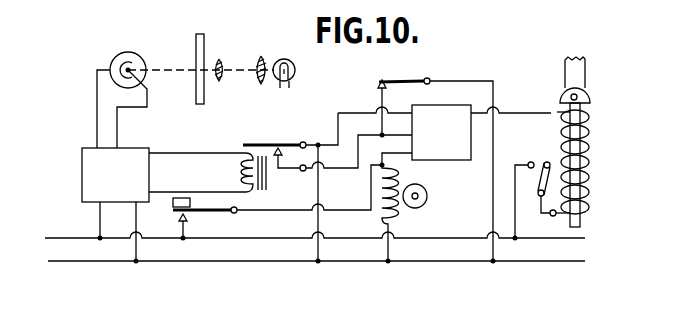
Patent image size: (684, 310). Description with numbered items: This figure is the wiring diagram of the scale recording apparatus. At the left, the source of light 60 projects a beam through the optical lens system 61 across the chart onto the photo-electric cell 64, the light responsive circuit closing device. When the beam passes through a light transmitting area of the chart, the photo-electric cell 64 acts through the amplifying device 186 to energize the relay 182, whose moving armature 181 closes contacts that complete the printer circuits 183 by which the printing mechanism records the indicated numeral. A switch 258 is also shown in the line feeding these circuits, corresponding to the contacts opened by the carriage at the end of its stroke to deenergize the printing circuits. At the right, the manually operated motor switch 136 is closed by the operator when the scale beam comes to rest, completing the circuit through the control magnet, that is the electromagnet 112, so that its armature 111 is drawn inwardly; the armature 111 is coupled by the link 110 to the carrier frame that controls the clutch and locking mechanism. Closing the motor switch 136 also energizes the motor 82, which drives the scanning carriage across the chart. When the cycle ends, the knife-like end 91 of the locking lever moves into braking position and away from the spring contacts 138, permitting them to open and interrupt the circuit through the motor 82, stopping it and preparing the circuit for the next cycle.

The photo-electric cell 64 is at (114, 62).
The source of light 60 is at (284, 59).
The optical lens system 61 is at (258, 83).
The switch 258 is at (381, 80).
The link 110 is at (568, 74).
The amplifying device 186 is at (93, 190).
The relay armature 181 is at (256, 142).
The relay 182 is at (240, 172).
The circuits 183 is at (446, 161).
The motor switch 136 is at (545, 160).
The electromagnet 112 is at (589, 165).
The armature 111 is at (582, 221).
The knife-like end of locking lever 91 is at (172, 204).
The spring contacts 138 is at (189, 214).
The motor 82 is at (427, 201).